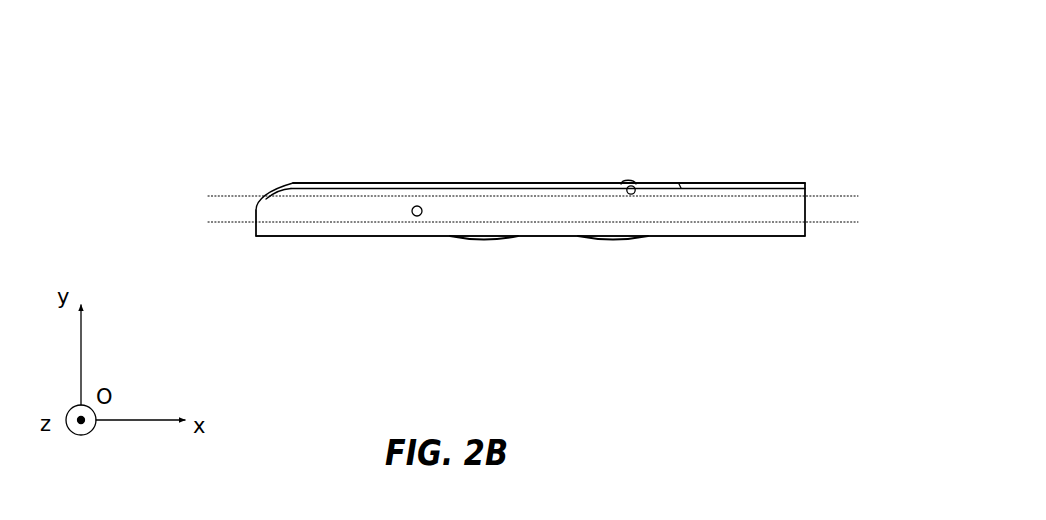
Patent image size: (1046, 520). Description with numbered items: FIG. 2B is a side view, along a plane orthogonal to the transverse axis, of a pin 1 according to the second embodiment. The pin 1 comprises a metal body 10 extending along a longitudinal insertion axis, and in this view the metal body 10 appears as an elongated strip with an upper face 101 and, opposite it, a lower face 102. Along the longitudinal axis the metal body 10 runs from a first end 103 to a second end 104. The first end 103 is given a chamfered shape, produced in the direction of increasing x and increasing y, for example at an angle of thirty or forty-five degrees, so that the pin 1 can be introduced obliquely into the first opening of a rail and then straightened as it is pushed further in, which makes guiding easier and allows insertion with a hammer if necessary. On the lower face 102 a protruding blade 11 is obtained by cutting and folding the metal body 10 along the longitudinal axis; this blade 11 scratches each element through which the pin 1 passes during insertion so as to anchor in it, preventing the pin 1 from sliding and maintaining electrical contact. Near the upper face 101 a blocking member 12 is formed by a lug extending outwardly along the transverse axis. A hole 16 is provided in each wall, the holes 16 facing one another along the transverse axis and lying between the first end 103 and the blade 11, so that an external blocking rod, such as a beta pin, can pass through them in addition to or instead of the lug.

The pin 1 is at (517, 163).
The metal body 10 is at (360, 183).
The blocking member 12 is at (626, 182).
The upper face 101 is at (762, 183).
The second end 104 is at (805, 213).
The first end 103 is at (250, 220).
The lower face 102 is at (388, 238).
The hole 16 is at (417, 218).
The protruding blade 11 is at (610, 240).